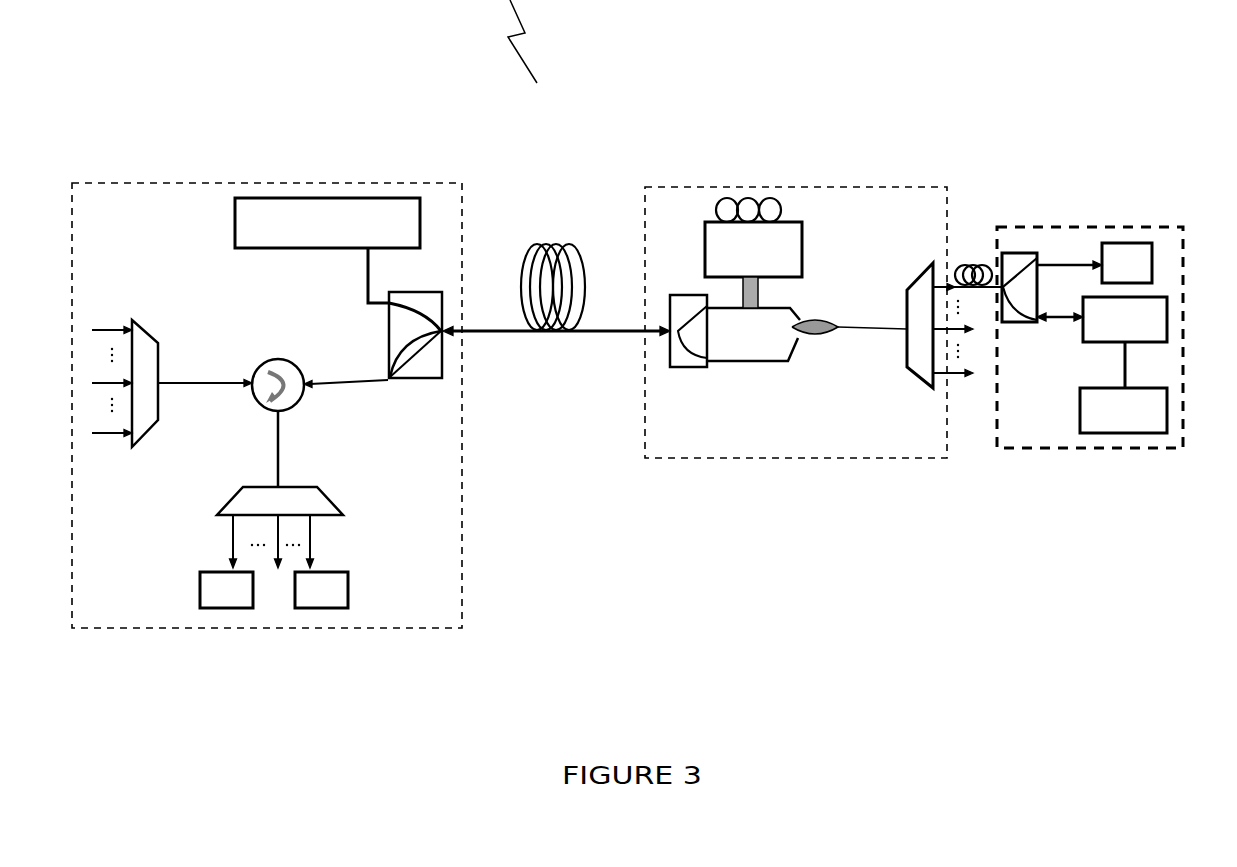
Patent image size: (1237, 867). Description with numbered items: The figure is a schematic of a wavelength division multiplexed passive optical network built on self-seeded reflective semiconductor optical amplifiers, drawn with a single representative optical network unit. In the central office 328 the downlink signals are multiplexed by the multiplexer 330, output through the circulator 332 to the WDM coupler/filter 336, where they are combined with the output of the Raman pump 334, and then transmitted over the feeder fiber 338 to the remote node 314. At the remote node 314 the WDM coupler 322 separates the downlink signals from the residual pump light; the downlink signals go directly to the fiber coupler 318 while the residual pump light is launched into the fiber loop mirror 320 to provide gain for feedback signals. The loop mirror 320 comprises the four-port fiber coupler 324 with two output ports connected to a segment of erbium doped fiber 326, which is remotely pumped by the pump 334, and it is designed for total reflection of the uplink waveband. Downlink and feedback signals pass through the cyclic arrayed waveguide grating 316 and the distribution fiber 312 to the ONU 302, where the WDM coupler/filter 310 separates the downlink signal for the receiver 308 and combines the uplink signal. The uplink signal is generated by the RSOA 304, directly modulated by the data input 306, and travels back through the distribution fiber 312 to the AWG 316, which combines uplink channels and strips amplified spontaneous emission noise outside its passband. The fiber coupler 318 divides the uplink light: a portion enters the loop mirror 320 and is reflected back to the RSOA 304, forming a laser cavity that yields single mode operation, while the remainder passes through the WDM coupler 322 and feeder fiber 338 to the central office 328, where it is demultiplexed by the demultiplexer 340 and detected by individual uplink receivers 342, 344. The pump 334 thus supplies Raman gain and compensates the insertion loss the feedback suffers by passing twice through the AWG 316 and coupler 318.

The optical network unit (ONU) 302 is at (1177, 227).
The reflective semiconductor optical amplifier (RSOA) 304 is at (1083, 345).
The data input 306 is at (1118, 433).
The receiver 308 is at (1117, 243).
The WDM coupler/filter 310 is at (1023, 253).
The distribution fiber 312 is at (993, 245).
The remote node (RN) 314 is at (662, 460).
The cyclic arrayed waveguide grating (AWG) 316 is at (928, 263).
The fiber coupler 318 is at (818, 337).
The fiber loop mirror 320 is at (802, 308).
The WDM coupler 322 is at (670, 362).
The four-port fiber coupler 324 is at (705, 283).
The erbium doped fiber (EDF) 326 is at (785, 175).
The central office (CO) 328 is at (95, 183).
The multiplexer (MUX) 330 is at (157, 343).
The circulator 332 is at (300, 404).
The Raman pump 334 is at (278, 198).
The WDM coupler/filter 336 is at (443, 353).
The feeder fiber 338 is at (618, 237).
The demultiplexer (DEMUX) 340 is at (340, 505).
The uplink receiver 342 is at (222, 608).
The uplink receiver 344 is at (337, 608).